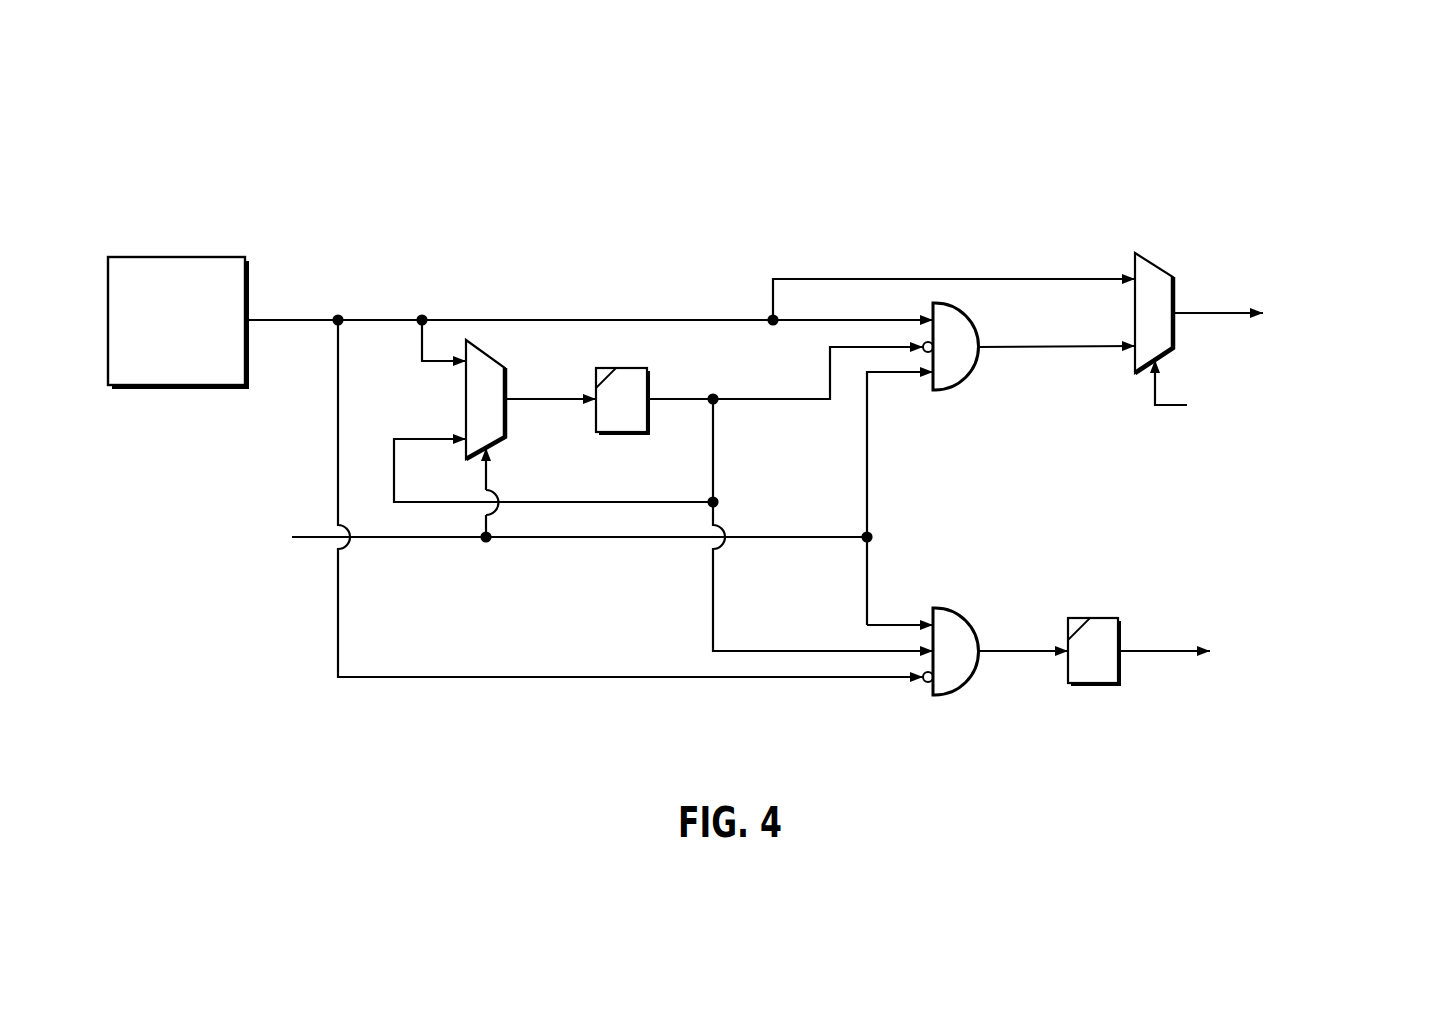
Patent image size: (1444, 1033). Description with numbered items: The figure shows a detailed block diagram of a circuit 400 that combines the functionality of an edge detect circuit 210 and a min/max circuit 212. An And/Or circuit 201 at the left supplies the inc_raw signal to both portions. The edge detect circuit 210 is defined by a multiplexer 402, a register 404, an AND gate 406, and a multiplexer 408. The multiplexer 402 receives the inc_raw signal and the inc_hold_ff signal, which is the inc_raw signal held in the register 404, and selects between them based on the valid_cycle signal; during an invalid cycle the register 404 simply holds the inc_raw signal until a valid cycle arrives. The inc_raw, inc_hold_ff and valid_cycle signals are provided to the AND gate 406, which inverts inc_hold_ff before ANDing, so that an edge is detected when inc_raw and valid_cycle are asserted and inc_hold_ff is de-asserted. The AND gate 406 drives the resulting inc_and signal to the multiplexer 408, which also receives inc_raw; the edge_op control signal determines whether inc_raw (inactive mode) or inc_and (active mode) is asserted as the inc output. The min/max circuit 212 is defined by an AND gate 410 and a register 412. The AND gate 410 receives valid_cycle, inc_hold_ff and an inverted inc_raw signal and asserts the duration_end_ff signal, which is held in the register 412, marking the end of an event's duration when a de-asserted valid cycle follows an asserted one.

The circuit 400 is at (1125, 132).
The And/Or circuit 201 is at (173, 256).
The edge detect circuit 210 is at (522, 282).
The min/max circuit 212 is at (1048, 760).
The multiplexer 402 is at (490, 356).
The register 404 is at (617, 434).
The AND gate 406 is at (964, 379).
The multiplexer 408 is at (1157, 265).
The AND gate 410 is at (957, 612).
The register 412 is at (1090, 618).